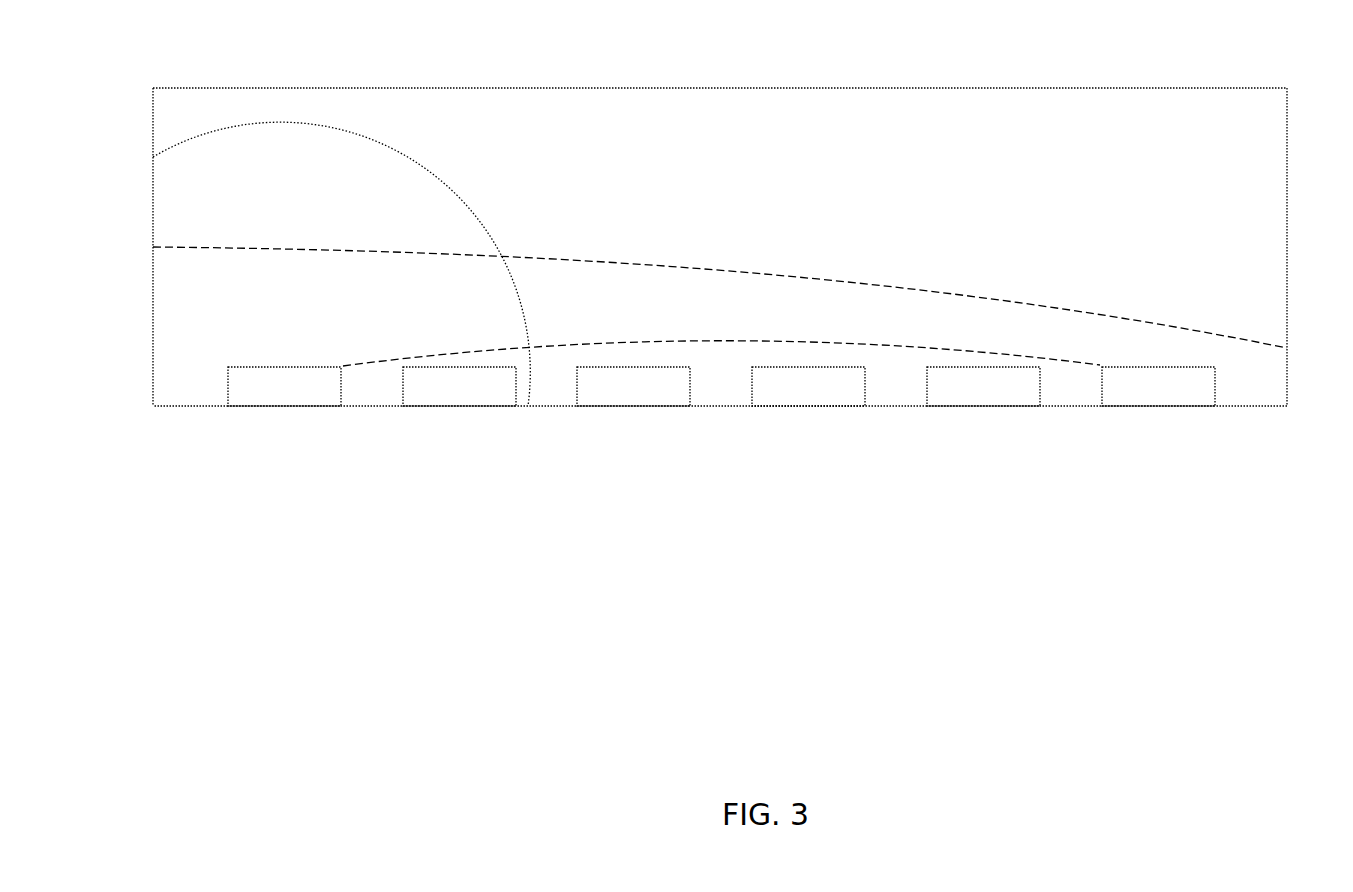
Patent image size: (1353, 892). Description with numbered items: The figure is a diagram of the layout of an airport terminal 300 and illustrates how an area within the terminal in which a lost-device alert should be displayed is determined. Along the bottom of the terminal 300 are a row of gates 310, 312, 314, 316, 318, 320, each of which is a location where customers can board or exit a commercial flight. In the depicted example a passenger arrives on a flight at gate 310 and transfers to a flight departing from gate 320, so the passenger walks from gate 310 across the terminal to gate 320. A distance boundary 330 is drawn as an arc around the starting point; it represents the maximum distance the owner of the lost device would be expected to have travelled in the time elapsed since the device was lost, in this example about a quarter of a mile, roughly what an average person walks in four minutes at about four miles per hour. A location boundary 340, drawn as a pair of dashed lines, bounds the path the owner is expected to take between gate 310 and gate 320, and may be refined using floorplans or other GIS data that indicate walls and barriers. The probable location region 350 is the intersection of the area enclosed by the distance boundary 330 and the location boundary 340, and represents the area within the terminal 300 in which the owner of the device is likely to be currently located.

The airport terminal 300 is at (703, 88).
The gate 310 is at (283, 408).
The gate 312 is at (467, 408).
The gate 314 is at (641, 408).
The gate 316 is at (815, 408).
The gate 318 is at (985, 408).
The gate 320 is at (1158, 408).
The distance boundary 330 is at (200, 135).
The location boundary 340 is at (1042, 355).
The probable location region 350 is at (153, 335).